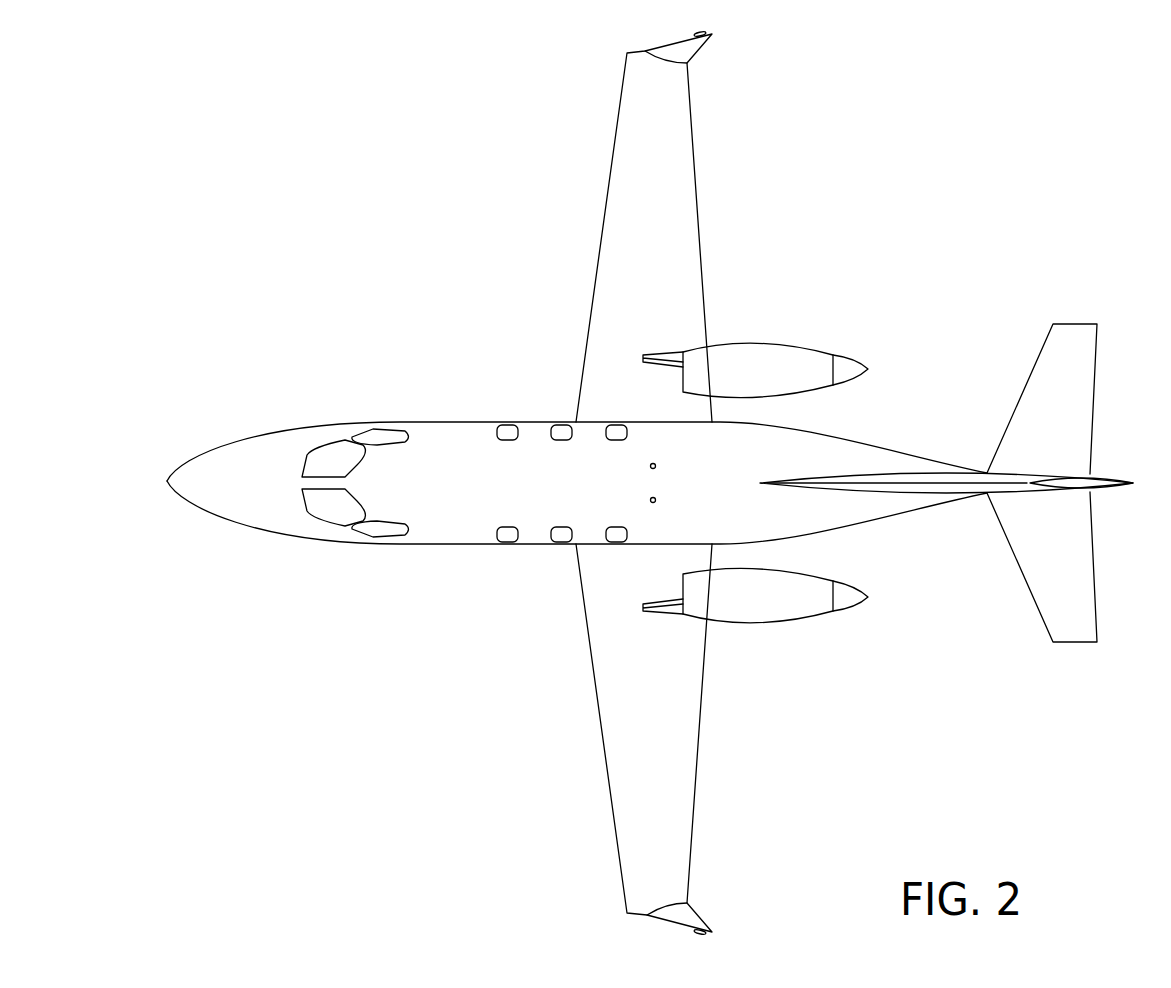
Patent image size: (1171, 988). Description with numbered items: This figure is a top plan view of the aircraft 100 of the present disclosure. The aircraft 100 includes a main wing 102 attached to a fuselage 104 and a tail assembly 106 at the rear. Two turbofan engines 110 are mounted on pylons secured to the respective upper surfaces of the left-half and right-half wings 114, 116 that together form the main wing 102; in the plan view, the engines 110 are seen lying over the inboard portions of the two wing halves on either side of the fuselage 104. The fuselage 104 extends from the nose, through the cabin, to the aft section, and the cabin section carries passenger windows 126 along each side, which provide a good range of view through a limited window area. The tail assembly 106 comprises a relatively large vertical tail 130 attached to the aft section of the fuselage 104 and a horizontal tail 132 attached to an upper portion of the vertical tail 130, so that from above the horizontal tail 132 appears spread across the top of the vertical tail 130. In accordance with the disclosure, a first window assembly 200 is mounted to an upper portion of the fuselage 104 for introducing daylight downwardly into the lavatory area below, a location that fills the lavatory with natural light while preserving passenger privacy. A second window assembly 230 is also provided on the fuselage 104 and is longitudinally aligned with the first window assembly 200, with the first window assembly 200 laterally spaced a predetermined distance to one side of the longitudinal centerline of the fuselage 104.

The aircraft 100 is at (420, 237).
The main wing 102 is at (537, 712).
The fuselage 104 is at (458, 458).
The tail assembly 106 is at (1010, 595).
The turbofan engines 110 is at (787, 355).
The left-half wing 114 is at (692, 732).
The right-half wing 116 is at (683, 143).
The passenger windows 126 is at (558, 425).
The vertical tail 130 is at (955, 477).
The horizontal tail 132 is at (1085, 376).
The first window assembly 200 is at (656, 500).
The second window assembly 230 is at (653, 463).